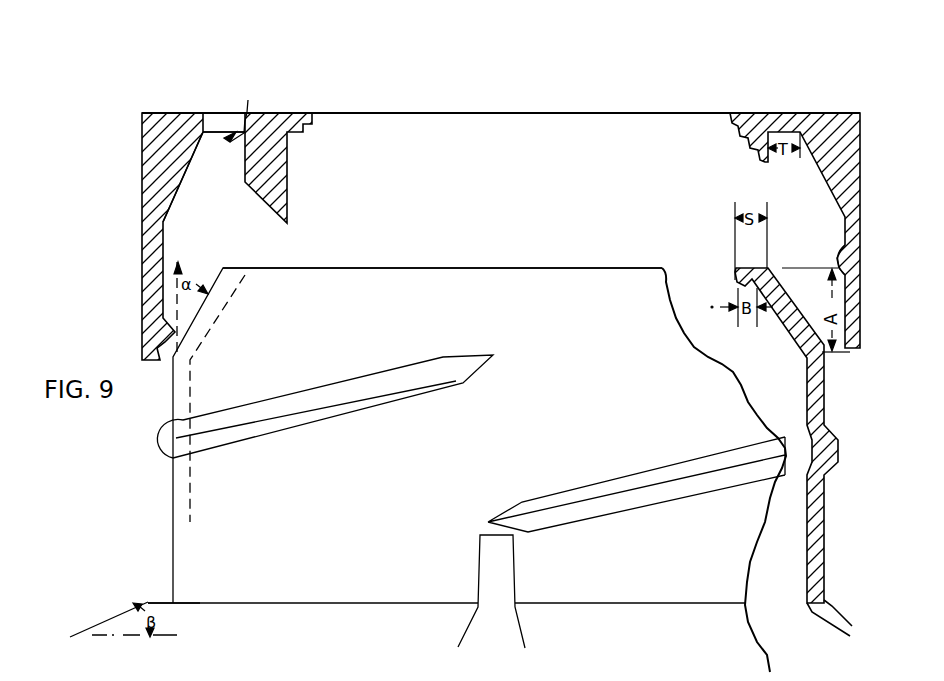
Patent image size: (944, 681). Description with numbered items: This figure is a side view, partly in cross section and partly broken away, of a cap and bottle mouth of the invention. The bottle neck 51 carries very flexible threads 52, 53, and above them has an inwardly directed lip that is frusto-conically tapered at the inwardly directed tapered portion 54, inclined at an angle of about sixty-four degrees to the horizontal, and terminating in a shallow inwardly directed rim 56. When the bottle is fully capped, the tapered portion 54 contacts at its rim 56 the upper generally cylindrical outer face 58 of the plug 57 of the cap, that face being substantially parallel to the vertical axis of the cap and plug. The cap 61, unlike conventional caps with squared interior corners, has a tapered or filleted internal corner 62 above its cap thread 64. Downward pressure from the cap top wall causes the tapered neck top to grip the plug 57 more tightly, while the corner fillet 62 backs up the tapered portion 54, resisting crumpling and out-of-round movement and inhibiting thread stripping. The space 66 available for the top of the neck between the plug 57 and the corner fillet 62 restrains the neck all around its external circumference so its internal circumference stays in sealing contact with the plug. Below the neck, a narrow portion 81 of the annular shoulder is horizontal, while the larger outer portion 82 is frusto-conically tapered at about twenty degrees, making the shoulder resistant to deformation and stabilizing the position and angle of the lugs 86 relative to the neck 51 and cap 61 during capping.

The neck 51 is at (358, 505).
The thread 52 is at (158, 440).
The thread 53 is at (168, 333).
The inwardly directed tapered portion 54 is at (212, 318).
The rim 56 is at (249, 268).
The plug 57 is at (272, 165).
The upper generally cylindrical outer face 58 is at (245, 160).
The cap 61 is at (158, 130).
The corner fillet 62 is at (178, 188).
The cap thread 64 is at (838, 254).
The space 66 is at (246, 111).
The narrow portion of the annular shoulder 81 is at (167, 601).
The outer portion of the shoulder 82 is at (122, 614).
The lug 86 is at (487, 563).